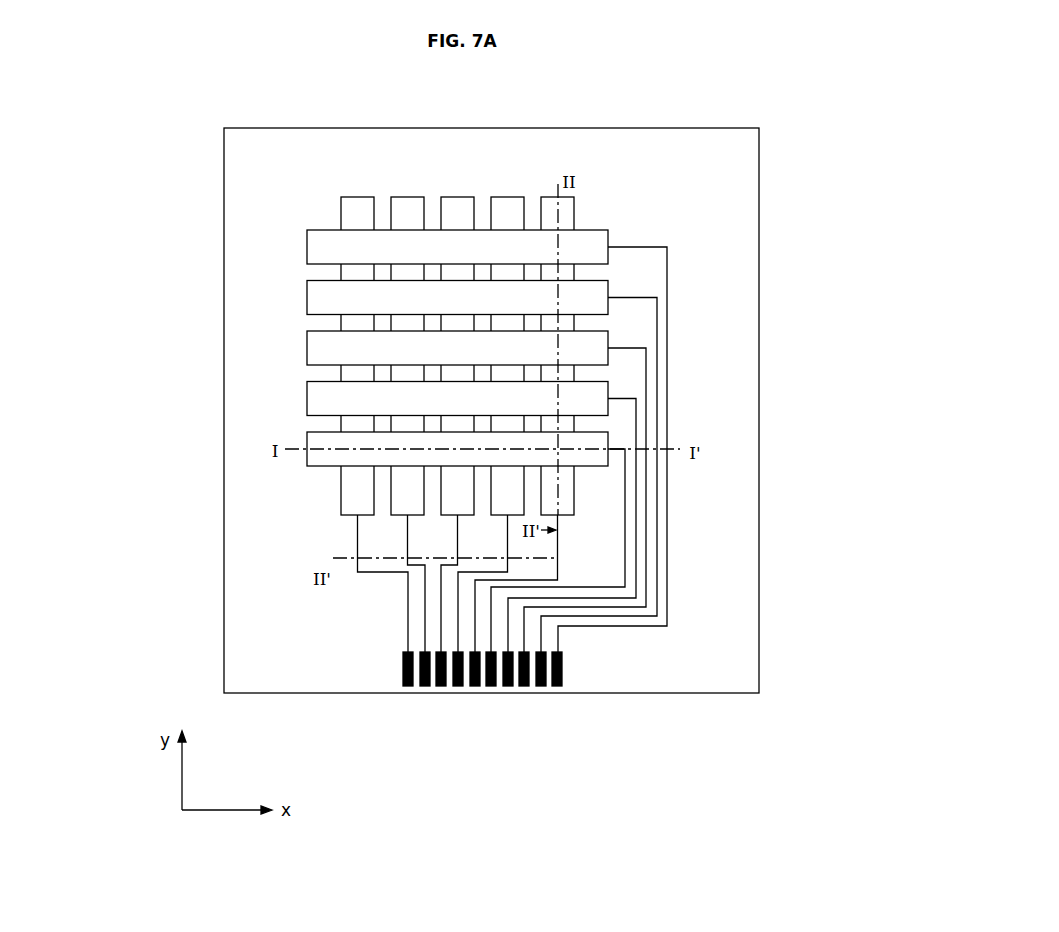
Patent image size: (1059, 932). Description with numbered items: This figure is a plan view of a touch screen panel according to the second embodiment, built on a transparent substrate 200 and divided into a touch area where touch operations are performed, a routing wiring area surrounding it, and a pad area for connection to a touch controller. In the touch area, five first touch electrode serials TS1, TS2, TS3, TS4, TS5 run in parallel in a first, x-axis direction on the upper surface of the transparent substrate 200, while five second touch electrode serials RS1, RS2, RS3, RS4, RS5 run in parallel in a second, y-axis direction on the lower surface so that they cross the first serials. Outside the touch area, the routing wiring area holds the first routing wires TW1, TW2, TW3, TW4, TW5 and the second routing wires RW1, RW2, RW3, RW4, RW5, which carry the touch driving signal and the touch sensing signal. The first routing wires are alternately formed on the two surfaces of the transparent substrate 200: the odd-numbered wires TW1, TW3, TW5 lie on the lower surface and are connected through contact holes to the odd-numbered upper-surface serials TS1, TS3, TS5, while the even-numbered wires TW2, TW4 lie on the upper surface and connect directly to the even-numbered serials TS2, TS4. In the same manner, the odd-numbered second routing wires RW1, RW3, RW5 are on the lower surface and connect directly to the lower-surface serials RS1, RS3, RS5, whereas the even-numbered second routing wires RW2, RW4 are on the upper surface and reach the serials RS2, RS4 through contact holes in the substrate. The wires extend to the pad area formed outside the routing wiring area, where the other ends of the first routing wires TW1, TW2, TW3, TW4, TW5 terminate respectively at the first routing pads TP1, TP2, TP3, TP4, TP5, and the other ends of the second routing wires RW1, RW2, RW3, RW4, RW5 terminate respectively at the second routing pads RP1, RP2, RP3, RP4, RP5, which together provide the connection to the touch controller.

The transparent substrate 200 is at (701, 677).
The first second electrode serial RS1 is at (358, 204).
The second second electrode serial RS2 is at (408, 204).
The third second electrode serial RS3 is at (458, 204).
The fourth second electrode serial RS4 is at (508, 204).
The fifth second electrode serial RS5 is at (555, 204).
The first first electrode serial TS1 is at (312, 247).
The second first electrode serial TS2 is at (312, 298).
The third first electrode serial TS3 is at (312, 348).
The fourth first electrode serial TS4 is at (312, 399).
The fifth first electrode serial TS5 is at (312, 455).
The first first routing wire TW1 is at (623, 243).
The second first routing wire TW2 is at (622, 294).
The third first routing wire TW3 is at (622, 345).
The fourth first routing wire TW4 is at (622, 396).
The fifth first routing wire TW5 is at (619, 446).
The first second routing wire RW1 is at (354, 538).
The second second routing wire RW2 is at (405, 533).
The third second routing wire RW3 is at (456, 533).
The fourth second routing wire RW4 is at (506, 538).
The fifth second routing wire RW5 is at (560, 540).
The first second routing pad RP1 is at (408, 686).
The second second routing pad RP2 is at (425, 686).
The third second routing pad RP3 is at (441, 686).
The fourth second routing pad RP4 is at (458, 686).
The fifth second routing pad RP5 is at (475, 686).
The first first routing pad TP1 is at (557, 686).
The second first routing pad TP2 is at (541, 686).
The third first routing pad TP3 is at (524, 686).
The fourth first routing pad TP4 is at (508, 686).
The fifth first routing pad TP5 is at (491, 686).